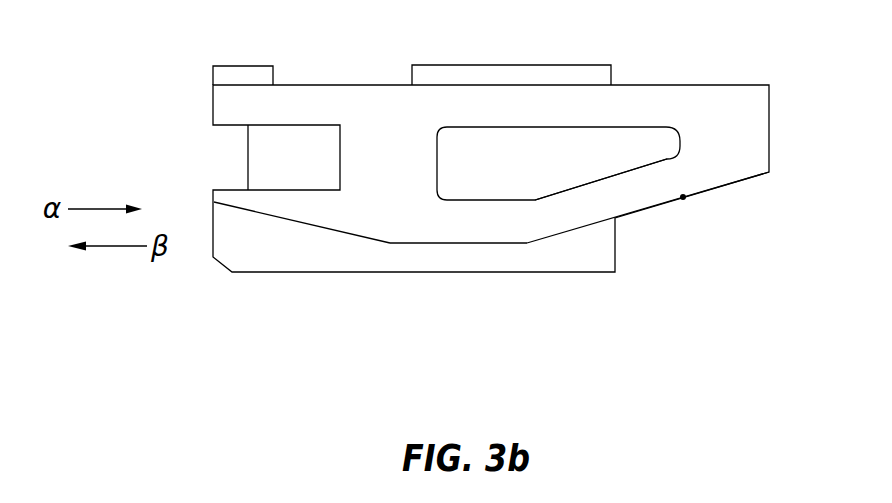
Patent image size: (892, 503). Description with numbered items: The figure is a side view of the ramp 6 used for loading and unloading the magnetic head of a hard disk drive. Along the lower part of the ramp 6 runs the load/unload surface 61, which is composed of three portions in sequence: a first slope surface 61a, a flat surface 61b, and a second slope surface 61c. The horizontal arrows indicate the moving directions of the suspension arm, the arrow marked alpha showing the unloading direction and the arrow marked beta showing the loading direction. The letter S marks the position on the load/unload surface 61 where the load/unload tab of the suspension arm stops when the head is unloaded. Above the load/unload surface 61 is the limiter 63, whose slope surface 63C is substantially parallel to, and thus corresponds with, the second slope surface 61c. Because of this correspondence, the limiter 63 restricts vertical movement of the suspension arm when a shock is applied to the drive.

The ramp 6 is at (683, 77).
The limiter 63 is at (512, 140).
The slope surface 63C is at (627, 172).
The stop position S is at (683, 197).
The load/unload surface 61 is at (491, 283).
The first slope surface 61a is at (323, 230).
The flat surface 61b is at (458, 245).
The second slope surface 61c is at (648, 246).